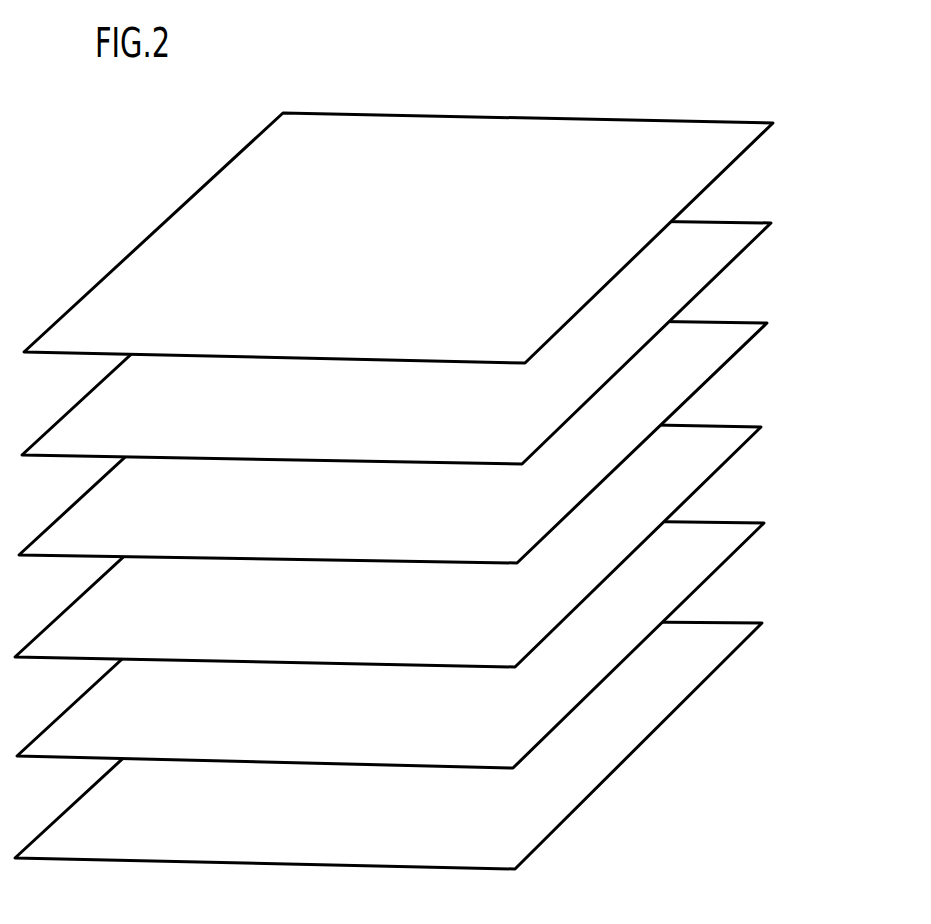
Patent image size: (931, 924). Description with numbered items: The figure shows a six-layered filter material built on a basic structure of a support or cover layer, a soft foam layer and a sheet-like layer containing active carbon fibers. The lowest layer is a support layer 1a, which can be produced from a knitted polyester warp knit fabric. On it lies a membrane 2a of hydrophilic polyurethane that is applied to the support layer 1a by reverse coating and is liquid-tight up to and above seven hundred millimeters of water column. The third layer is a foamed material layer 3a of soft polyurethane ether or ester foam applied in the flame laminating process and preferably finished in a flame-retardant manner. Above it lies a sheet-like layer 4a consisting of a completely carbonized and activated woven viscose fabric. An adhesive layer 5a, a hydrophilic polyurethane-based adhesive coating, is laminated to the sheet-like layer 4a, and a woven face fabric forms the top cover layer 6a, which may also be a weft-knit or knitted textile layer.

The support layer 1a is at (697, 658).
The membrane 2a is at (708, 552).
The foamed material layer 3a is at (700, 455).
The sheet-like layer 4a is at (707, 352).
The adhesive layer 5a is at (717, 250).
The cover layer 6a is at (705, 162).